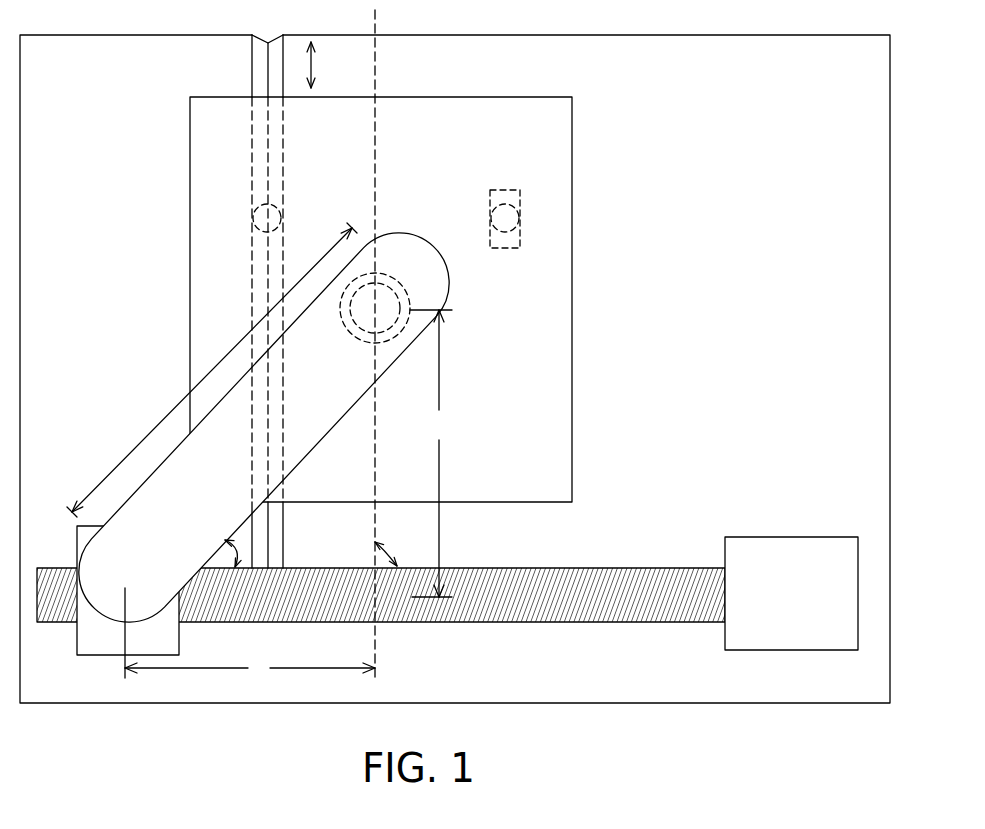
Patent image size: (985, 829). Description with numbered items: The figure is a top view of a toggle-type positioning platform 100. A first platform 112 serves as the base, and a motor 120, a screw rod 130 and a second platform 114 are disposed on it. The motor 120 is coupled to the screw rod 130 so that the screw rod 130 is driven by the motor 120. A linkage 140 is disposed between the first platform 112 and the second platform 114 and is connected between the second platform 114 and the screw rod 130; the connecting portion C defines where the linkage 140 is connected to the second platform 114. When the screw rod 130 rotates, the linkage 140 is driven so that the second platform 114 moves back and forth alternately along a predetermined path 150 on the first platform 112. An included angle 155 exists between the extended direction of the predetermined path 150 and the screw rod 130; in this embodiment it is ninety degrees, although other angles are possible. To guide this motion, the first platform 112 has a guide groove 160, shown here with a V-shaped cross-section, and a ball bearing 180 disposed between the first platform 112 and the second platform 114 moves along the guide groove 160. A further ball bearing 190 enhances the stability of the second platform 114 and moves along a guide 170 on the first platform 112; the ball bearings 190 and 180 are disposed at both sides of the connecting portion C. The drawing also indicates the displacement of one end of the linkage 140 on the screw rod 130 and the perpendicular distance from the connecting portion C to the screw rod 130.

The toggle-type positioning platform 100 is at (494, 391).
The first platform 112 is at (880, 100).
The second platform 114 is at (562, 148).
The motor 120 is at (858, 593).
The screw rod 130 is at (641, 621).
The linkage 140 is at (135, 497).
The predetermined path 150 is at (307, 66).
The included angle 155 is at (395, 535).
The guide groove 160 is at (262, 80).
The guide 170 is at (521, 235).
The ball bearing 180 is at (252, 218).
The ball bearing 190 is at (519, 218).
The connecting portion C is at (400, 283).